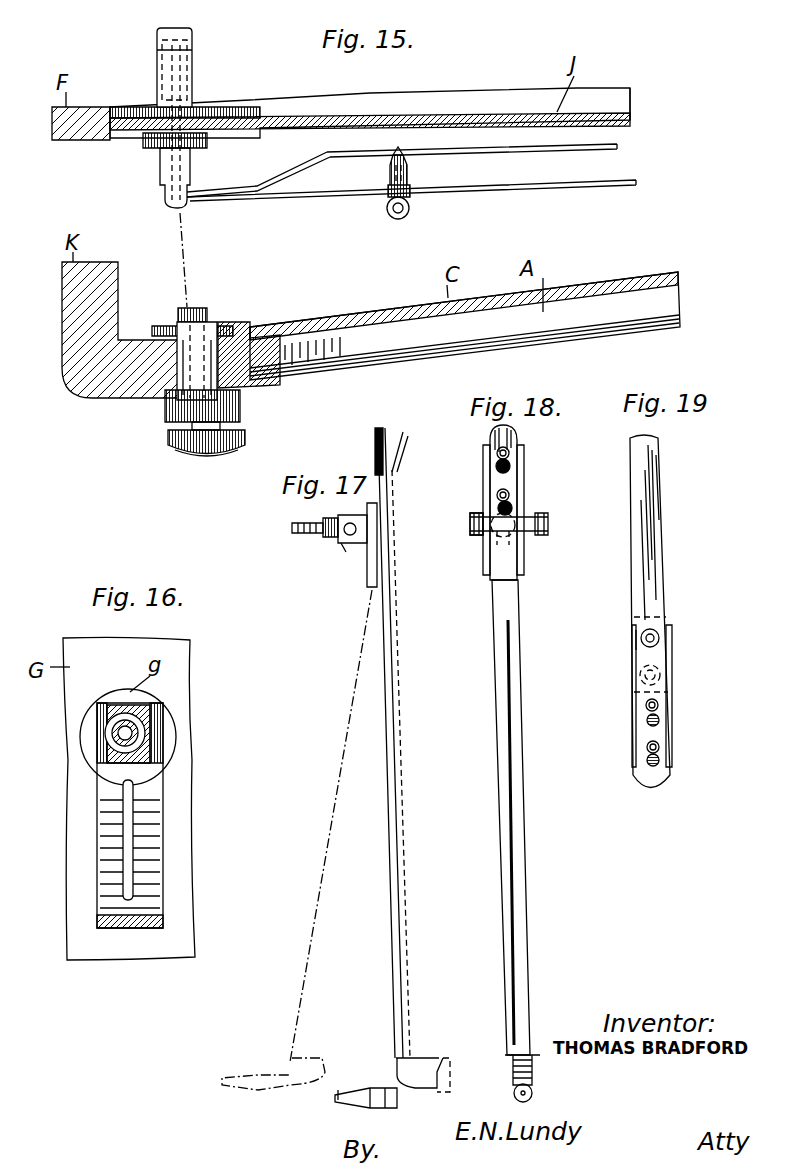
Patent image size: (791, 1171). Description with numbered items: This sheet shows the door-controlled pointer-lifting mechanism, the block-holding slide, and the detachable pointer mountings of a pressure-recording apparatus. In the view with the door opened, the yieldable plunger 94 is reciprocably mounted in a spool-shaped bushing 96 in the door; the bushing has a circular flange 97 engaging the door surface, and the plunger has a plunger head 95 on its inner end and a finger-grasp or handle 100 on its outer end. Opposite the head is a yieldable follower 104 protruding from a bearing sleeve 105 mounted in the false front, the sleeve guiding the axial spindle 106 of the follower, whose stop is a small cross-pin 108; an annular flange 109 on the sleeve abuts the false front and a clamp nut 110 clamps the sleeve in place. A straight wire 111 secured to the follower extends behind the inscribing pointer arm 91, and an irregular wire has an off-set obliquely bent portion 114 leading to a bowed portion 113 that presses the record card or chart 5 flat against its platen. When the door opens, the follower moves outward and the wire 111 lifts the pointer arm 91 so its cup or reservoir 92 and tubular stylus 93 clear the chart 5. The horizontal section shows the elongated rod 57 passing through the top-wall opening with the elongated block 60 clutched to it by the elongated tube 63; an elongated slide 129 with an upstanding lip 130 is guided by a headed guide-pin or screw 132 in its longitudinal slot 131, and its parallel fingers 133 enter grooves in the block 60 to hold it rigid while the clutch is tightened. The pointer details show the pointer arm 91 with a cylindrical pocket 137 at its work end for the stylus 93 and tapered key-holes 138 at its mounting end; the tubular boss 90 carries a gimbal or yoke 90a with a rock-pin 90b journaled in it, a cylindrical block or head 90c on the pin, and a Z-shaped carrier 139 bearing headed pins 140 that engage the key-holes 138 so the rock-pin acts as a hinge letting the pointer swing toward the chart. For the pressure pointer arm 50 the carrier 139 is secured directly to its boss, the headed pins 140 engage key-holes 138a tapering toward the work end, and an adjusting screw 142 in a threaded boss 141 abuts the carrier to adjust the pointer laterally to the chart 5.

In FIG. 15, the record card or chart 5 is at (618, 121).
In FIG. 15, the yieldable follower 104 is at (168, 185).
In FIG. 15, the bearing sleeve 105 is at (187, 72).
In FIG. 15, the axial spindle 106 is at (172, 68).
In FIG. 15, the cross-pin 108 is at (192, 50).
In FIG. 15, the annular flange 109 is at (145, 138).
In FIG. 15, the clamp nut 110 is at (197, 110).
In FIG. 15, the wire 111 is at (610, 184).
In FIG. 15, the bowed portion 113 is at (603, 147).
In FIG. 15, the off-set obliquely bent portion 114 is at (307, 170).
In FIG. 15, the inscribing pointer arm 91 is at (407, 194).
In FIG. 17, the inscribing pointer arm 91 is at (388, 773).
In FIG. 18, the inscribing pointer arm 91 is at (522, 890).
In FIG. 15, the cup or reservoir 92 is at (402, 219).
In FIG. 17, the cup or reservoir 92 is at (400, 1065).
In FIG. 18, the cup or reservoir 92 is at (512, 1068).
In FIG. 15, the tubular stylus 93 is at (401, 149).
In FIG. 17, the tubular stylus 93 is at (337, 1090).
In FIG. 15, the yieldable plunger 94 is at (158, 398).
In FIG. 15, the plunger head 95 is at (201, 309).
In FIG. 15, the spool-shaped bushing 96 is at (233, 328).
In FIG. 15, the circular flange 97 is at (241, 398).
In FIG. 15, the finger-grasp or handle 100 is at (172, 440).
In FIG. 16, the elongated rod 57 is at (150, 727).
In FIG. 16, the elongated block 60 is at (107, 763).
In FIG. 16, the elongated tube 63 is at (140, 740).
In FIG. 16, the elongated slide 129 is at (155, 855).
In FIG. 16, the upstanding lip 130 is at (140, 925).
In FIG. 16, the longitudinal slot 131 is at (130, 878).
In FIG. 16, the headed guide-pin or screw 132 is at (125, 840).
In FIG. 16, the parallel fingers 133 is at (152, 727).
In FIG. 17, the cylindrical pocket 137 is at (387, 1104).
In FIG. 18, the cylindrical pocket 137 is at (515, 1093).
In FIG. 18, the key-holes 138 is at (512, 506).
In FIG. 19, the key-holes 138a is at (667, 757).
In FIG. 17, the Z-shaped carrier 139 is at (365, 560).
In FIG. 18, the Z-shaped carrier 139 is at (510, 585).
In FIG. 19, the Z-shaped carrier 139 is at (667, 602).
In FIG. 17, the headed pins 140 is at (400, 447).
In FIG. 18, the headed pins 140 is at (497, 495).
In FIG. 19, the headed pins 140 is at (645, 748).
In FIG. 19, the threaded boss 141 is at (637, 642).
In FIG. 19, the adjusting screw 142 is at (659, 632).
In FIG. 19, the pointer arm 50 is at (657, 518).
In FIG. 17, the tubular boss 90 is at (305, 535).
In FIG. 18, the tubular boss 90 is at (490, 532).
In FIG. 19, the tubular boss 90 is at (662, 673).
In FIG. 17, the gimbal or yoke 90a is at (330, 522).
In FIG. 18, the gimbal or yoke 90a is at (545, 517).
In FIG. 17, the rock-pin 90b is at (343, 545).
In FIG. 18, the rock-pin 90b is at (478, 517).
In FIG. 17, the cylindrical block or head 90c is at (351, 515).
In FIG. 18, the cylindrical block or head 90c is at (518, 530).